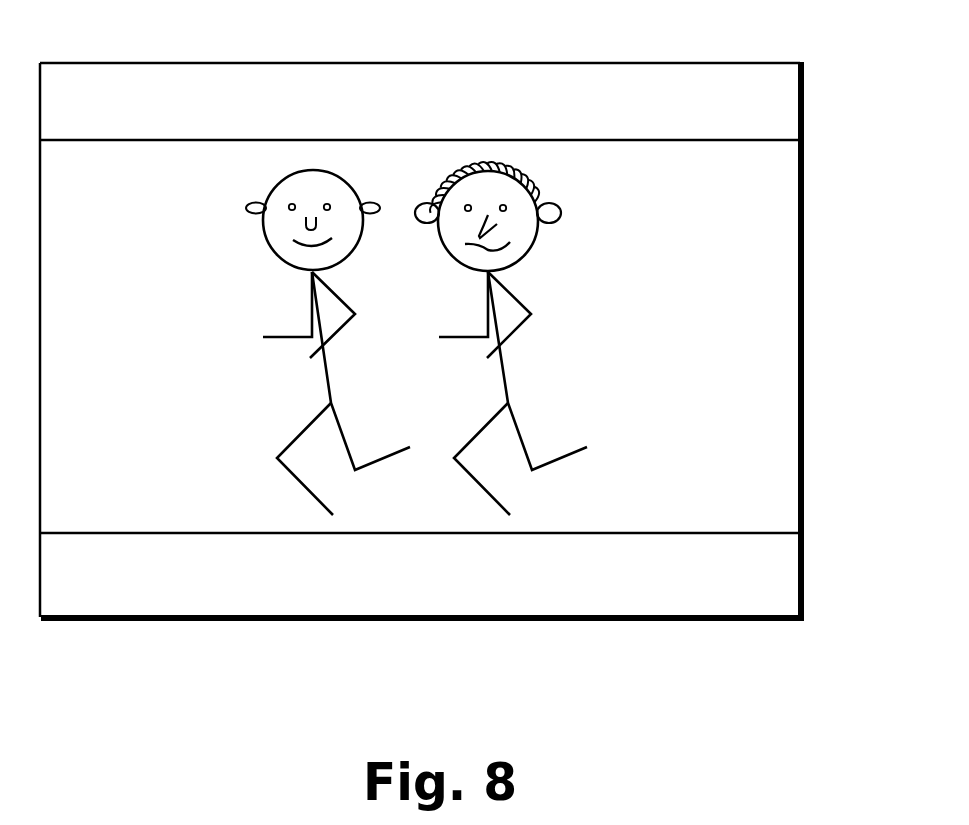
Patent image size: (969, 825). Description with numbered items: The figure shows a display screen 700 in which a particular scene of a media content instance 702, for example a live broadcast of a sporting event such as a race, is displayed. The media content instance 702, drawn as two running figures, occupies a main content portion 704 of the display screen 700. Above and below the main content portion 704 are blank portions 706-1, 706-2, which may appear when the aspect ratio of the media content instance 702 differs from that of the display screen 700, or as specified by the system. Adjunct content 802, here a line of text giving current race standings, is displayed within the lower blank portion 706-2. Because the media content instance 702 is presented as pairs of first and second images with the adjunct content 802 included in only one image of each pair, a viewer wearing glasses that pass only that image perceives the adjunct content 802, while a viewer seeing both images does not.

The display screen 700 is at (577, 63).
The media content instance 702 is at (695, 257).
The main content portion 704 is at (808, 142).
The blank portion 706-1 is at (808, 63).
The blank portion 706-2 is at (808, 535).
The adjunct content 802 is at (663, 587).